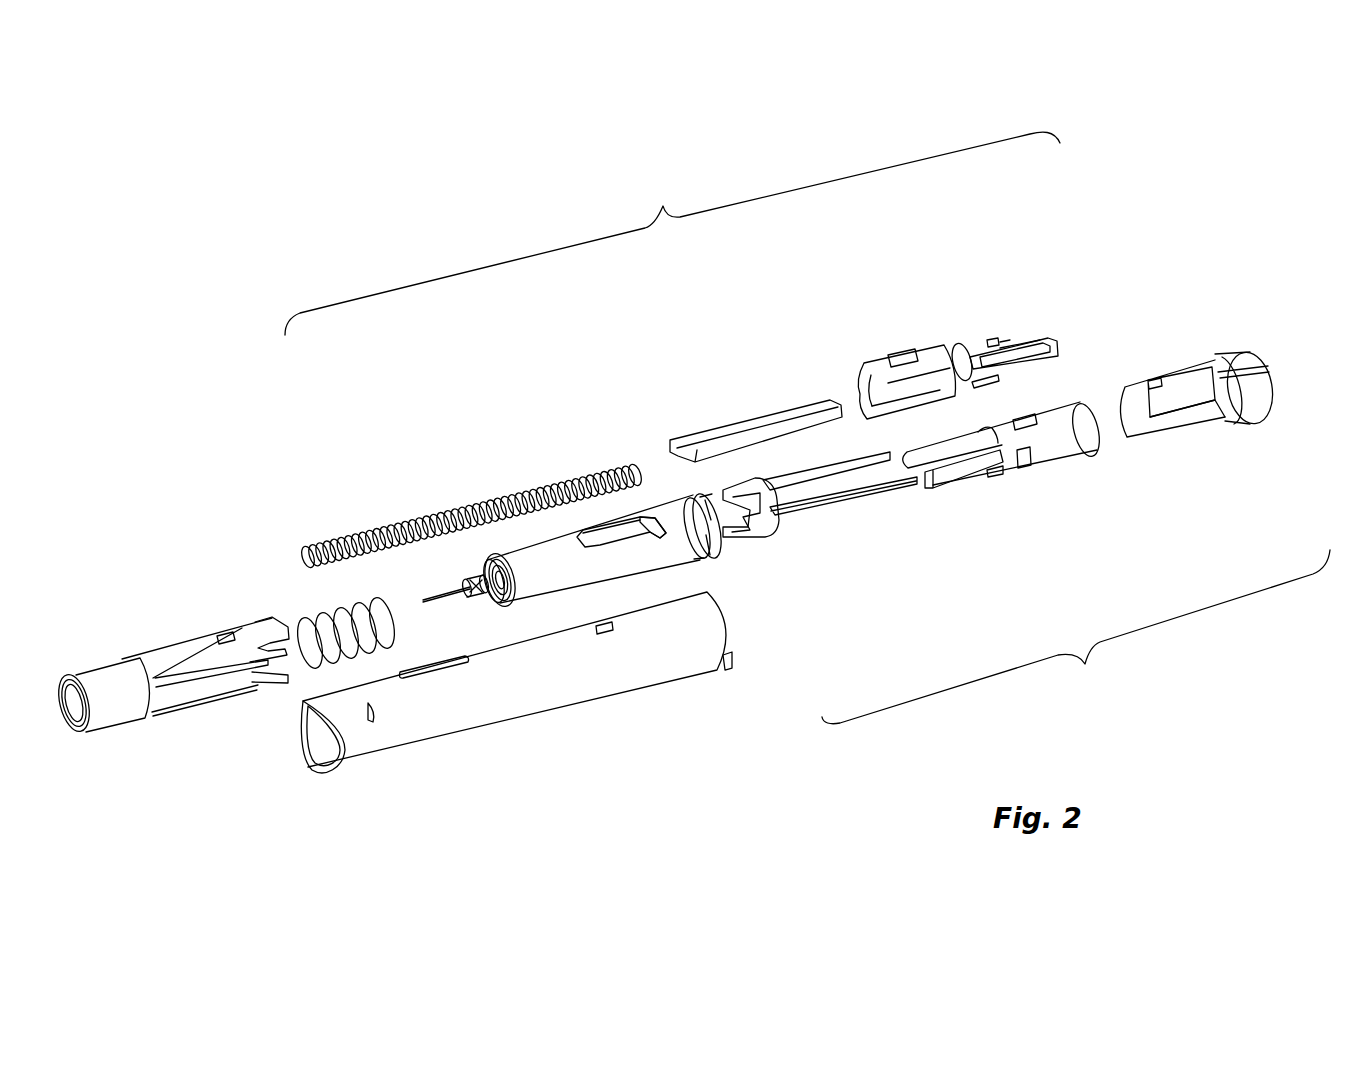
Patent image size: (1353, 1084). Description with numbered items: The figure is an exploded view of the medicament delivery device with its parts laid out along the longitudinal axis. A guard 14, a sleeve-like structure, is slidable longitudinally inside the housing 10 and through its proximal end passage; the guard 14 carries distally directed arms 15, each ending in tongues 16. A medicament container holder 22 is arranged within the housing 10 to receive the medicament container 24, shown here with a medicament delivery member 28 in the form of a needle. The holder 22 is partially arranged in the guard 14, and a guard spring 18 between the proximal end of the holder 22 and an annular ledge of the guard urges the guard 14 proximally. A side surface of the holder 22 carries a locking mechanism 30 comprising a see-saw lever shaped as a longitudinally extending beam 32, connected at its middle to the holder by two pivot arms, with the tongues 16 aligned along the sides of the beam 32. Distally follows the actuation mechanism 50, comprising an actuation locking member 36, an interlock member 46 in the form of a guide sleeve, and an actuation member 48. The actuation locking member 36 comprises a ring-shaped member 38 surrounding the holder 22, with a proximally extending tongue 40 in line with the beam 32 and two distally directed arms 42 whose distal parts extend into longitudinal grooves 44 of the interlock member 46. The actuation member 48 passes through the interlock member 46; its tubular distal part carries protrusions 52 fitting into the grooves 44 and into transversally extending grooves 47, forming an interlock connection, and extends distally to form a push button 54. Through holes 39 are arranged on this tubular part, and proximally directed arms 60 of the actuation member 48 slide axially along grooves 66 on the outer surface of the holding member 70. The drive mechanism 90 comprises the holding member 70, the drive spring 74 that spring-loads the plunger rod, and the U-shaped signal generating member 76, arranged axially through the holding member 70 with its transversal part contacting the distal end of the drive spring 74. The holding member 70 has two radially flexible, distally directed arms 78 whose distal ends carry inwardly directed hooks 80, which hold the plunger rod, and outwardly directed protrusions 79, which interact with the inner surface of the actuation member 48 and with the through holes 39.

The housing tube 10 is at (560, 694).
The guard 14 is at (120, 672).
The arms 15 is at (200, 692).
The tongues 16 is at (268, 626).
The guard spring 18 is at (345, 615).
The medicament container holder 22 is at (526, 568).
The medicament container 24 is at (503, 583).
The medicament delivery member 28 is at (442, 598).
The locking mechanism 30 is at (602, 495).
The beam 32 is at (628, 522).
The actuation locking member 36 is at (888, 532).
The ring-shaped member 38 is at (767, 518).
The through holes 39 is at (1027, 423).
The tongue 40 is at (738, 495).
The arms 42 is at (845, 505).
The grooves 44 is at (1183, 417).
The interlock member 46 is at (1180, 375).
The grooves 47 is at (1210, 385).
The actuation member 48 is at (1060, 480).
The actuation mechanism 50 is at (1076, 637).
The protrusions 52 is at (1027, 468).
The push button 54 is at (1067, 420).
The arms 60 is at (953, 478).
The grooves 66 is at (928, 396).
The holding member 70 is at (925, 348).
The drive spring 74 is at (455, 517).
The signal generating member 76 is at (775, 417).
The arms 78 is at (985, 335).
The protrusions 79 is at (1000, 340).
The hooks 80 is at (1000, 348).
The drive mechanism 90 is at (672, 233).